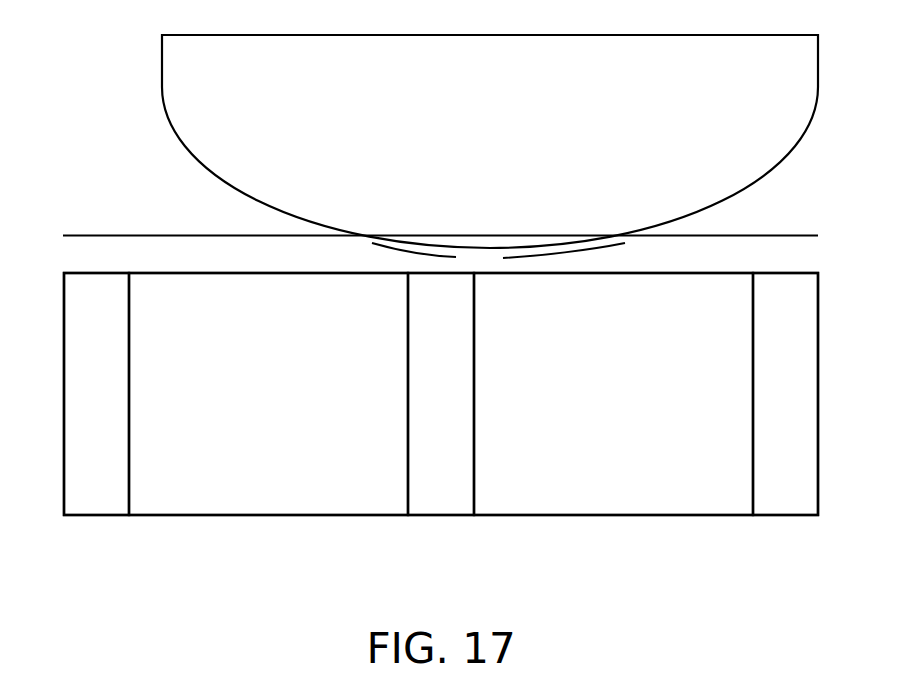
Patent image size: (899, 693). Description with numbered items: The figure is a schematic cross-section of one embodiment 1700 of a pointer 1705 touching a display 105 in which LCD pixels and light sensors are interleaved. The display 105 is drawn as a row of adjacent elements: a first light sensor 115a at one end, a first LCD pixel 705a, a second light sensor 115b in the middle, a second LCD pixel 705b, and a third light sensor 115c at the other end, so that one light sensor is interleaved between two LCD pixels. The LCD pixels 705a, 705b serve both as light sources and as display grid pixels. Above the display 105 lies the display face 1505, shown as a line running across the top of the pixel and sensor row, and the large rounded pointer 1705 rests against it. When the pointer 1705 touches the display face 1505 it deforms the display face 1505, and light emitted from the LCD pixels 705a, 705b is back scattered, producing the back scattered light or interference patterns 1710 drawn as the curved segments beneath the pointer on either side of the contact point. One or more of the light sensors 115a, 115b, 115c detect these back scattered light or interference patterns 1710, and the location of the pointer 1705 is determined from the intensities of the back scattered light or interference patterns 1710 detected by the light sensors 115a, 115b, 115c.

The touch display system 1700 is at (130, 133).
The pointer 1705 is at (490, 141).
The display face 1505 is at (101, 235).
The back scattered light/interference patterns 1710 is at (371, 243).
The display 105 is at (802, 259).
The LCD pixel 705a is at (268, 394).
The LCD pixel 705b is at (613, 394).
The light sensor 115a is at (98, 516).
The light sensor 115b is at (443, 516).
The light sensor 115c is at (790, 516).